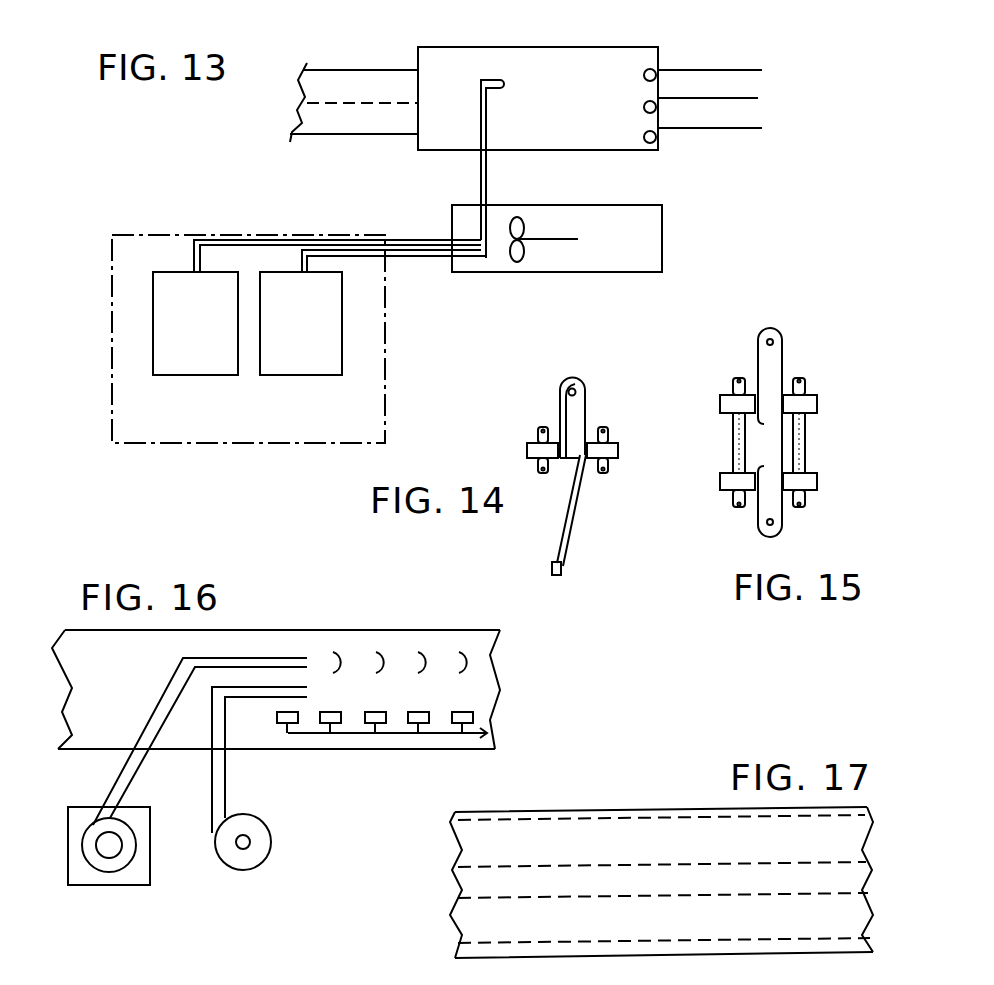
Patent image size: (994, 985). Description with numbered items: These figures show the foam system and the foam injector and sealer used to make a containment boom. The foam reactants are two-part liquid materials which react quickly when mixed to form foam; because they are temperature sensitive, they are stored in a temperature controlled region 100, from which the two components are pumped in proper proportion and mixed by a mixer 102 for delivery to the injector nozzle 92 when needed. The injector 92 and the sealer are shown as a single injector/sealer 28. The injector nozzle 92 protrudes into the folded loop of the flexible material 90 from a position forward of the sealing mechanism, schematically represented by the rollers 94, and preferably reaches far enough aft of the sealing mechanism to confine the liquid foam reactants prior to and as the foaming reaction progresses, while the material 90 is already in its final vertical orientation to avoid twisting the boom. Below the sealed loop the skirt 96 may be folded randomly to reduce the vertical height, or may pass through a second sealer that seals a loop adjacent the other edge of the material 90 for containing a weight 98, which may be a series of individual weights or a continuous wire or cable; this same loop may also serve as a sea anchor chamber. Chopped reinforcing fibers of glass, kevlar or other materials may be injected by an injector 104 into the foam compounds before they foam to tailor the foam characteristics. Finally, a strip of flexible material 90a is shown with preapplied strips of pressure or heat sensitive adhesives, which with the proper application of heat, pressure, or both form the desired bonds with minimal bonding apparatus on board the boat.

In FIG. 13, the injector/sealer 28 is at (563, 47).
In FIG. 13, the injector nozzle 92 is at (493, 78).
In FIG. 14, the injector nozzle 92 is at (565, 385).
In FIG. 15, the injector nozzle 92 is at (777, 338).
In FIG. 16, the injector nozzle 92 is at (282, 658).
In FIG. 13, the mixer 102 is at (650, 212).
In FIG. 16, the mixer 102 is at (123, 877).
In FIG. 13, the temperature controlled region 100 is at (380, 326).
In FIG. 14, the strip 90 is at (587, 390).
In FIG. 15, the strip 90 is at (783, 368).
In FIG. 14, the rollers 94 is at (527, 448).
In FIG. 14, the skirt 96 is at (575, 509).
In FIG. 15, the weight 98 is at (774, 522).
In FIG. 16, the injector 104 is at (245, 857).
In FIG. 17, the strip 90a is at (557, 812).